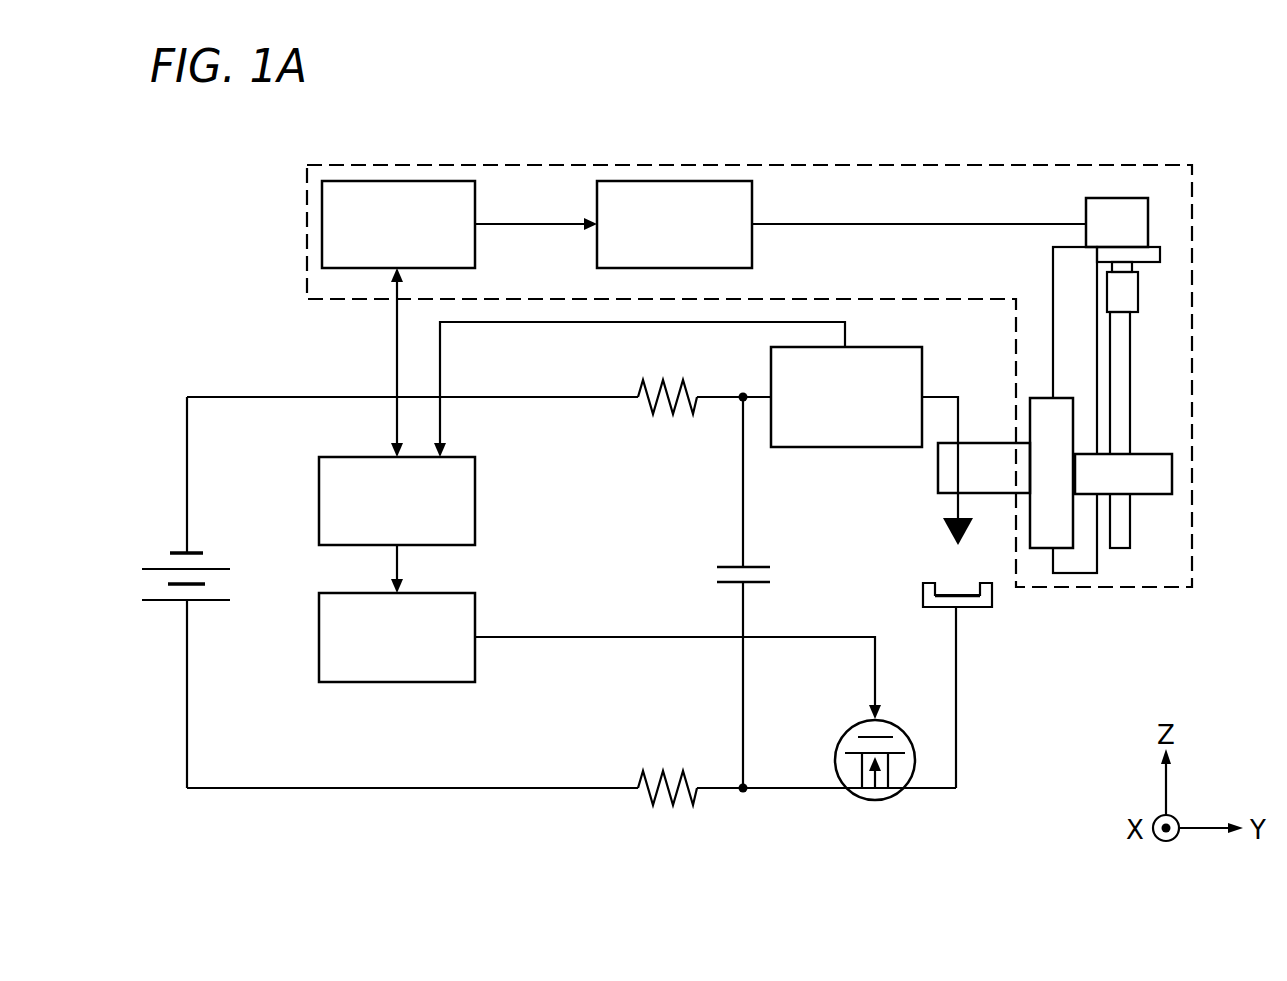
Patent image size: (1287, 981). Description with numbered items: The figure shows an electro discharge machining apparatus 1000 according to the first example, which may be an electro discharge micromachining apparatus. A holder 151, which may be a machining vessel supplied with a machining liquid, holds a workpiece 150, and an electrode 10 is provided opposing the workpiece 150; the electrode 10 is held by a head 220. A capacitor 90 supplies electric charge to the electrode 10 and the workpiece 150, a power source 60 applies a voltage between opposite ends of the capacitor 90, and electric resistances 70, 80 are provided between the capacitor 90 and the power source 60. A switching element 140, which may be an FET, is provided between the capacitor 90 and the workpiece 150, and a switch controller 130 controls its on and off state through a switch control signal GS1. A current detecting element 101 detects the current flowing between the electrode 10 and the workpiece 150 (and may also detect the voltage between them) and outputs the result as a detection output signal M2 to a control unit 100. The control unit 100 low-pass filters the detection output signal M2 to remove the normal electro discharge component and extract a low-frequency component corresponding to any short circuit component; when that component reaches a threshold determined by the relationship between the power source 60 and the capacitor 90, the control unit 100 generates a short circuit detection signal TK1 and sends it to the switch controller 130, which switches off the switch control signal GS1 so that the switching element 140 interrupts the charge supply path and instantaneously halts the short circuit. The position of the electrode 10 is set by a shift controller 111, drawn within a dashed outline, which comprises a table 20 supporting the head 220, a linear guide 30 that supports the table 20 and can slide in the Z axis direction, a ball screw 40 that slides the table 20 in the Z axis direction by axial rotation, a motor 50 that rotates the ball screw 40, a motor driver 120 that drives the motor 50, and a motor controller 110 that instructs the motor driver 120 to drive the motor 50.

The electro discharge machining apparatus 1000 is at (1164, 80).
The shift controller 111 is at (1195, 211).
The motor controller 110 is at (428, 181).
The motor driver 120 is at (702, 181).
The motor 50 is at (1107, 198).
The linear guide 30 is at (1083, 347).
The ball screw 40 is at (1132, 337).
The table 20 is at (1065, 510).
The head 220 is at (936, 484).
The current detecting element 101 is at (922, 372).
The electrode 10 is at (945, 538).
The detection output signal M2 is at (520, 323).
The control unit 100 is at (475, 483).
The short circuit detection signal TK1 is at (400, 553).
The switch controller 130 is at (433, 683).
The switch control signal GS1 is at (588, 640).
The switching element 140 is at (878, 800).
The electric resistance 80 is at (670, 414).
The electric resistance 70 is at (670, 806).
The power source 60 is at (177, 552).
The capacitor 90 is at (730, 567).
The workpiece 150 is at (1006, 685).
The holder 151 is at (970, 608).